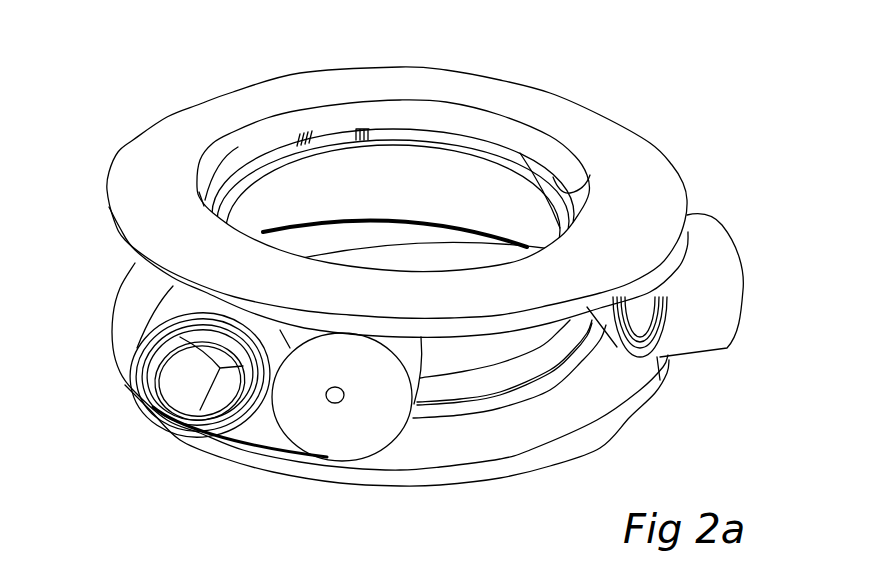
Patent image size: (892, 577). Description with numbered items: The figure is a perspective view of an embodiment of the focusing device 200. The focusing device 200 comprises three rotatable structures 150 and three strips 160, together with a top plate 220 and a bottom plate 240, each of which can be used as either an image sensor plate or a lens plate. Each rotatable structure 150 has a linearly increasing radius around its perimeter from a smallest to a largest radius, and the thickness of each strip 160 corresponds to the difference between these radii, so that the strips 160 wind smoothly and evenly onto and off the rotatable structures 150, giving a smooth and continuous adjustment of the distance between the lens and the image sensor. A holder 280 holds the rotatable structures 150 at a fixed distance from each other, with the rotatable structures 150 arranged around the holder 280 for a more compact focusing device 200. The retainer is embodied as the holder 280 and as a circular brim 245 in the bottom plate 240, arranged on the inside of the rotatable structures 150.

The focusing device 200 is at (665, 80).
The top plate 220 is at (161, 241).
The holder 280 is at (509, 187).
The rotatable structure 150 is at (233, 168).
The strip 160 is at (368, 132).
The circular brim 245 is at (461, 403).
The bottom plate 240 is at (580, 422).